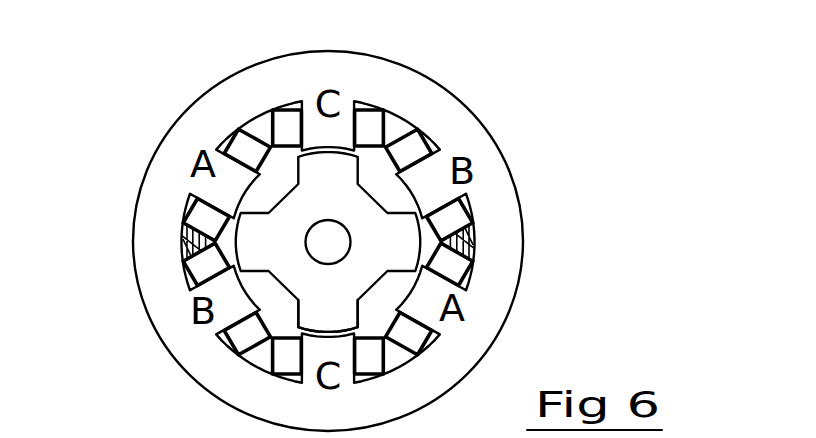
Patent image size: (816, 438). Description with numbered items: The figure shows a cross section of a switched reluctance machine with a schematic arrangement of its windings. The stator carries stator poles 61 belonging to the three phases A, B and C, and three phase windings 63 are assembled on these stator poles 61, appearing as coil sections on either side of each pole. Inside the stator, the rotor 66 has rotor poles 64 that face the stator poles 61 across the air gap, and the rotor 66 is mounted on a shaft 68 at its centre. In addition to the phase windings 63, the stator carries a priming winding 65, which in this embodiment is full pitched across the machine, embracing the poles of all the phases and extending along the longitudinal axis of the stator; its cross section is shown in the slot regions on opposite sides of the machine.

The stator poles 61 is at (347, 126).
The phase windings 63 is at (420, 144).
The rotor poles 64 is at (250, 313).
The priming winding 65 is at (442, 243).
The rotor 66 is at (268, 257).
The shaft 68 is at (334, 241).